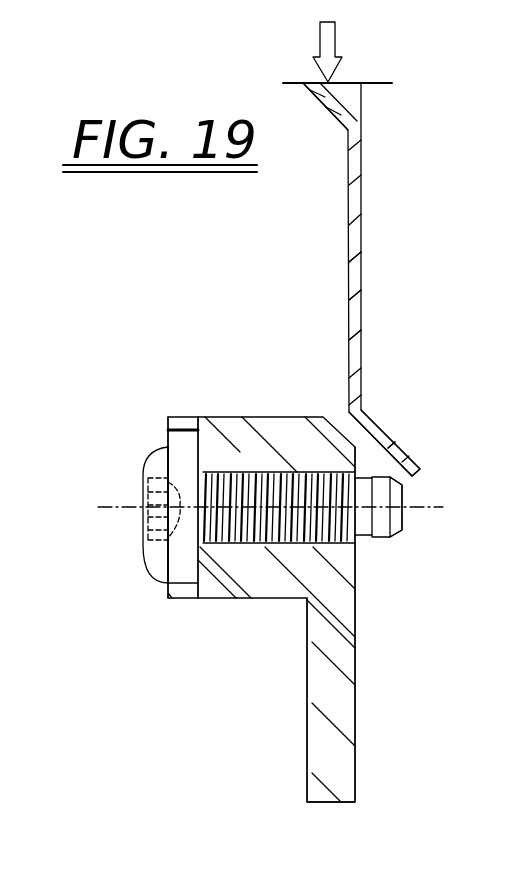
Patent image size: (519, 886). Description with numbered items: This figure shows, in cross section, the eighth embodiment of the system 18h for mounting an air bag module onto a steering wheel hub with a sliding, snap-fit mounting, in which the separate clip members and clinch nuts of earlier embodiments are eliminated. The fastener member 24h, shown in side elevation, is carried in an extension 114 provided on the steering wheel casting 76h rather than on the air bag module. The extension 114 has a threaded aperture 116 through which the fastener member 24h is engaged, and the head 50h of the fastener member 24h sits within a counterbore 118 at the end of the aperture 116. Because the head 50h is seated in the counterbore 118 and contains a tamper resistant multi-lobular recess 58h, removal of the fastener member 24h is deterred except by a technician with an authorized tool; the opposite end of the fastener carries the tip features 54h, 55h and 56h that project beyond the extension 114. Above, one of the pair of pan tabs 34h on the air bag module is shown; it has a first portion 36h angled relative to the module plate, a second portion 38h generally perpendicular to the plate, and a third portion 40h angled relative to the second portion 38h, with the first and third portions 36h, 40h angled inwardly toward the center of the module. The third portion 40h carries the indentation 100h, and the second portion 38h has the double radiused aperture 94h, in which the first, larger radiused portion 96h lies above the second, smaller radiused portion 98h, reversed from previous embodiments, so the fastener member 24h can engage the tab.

The system 18h is at (235, 693).
The fastener member 24h is at (143, 560).
The pan tab 34h is at (360, 188).
The first portion 36h is at (342, 97).
The second portion 38h is at (348, 160).
The third portion 40h is at (378, 420).
The head 50h is at (170, 458).
The screw tip 54h is at (400, 518).
The screw tip cap 55h is at (400, 493).
The screw neck 56h is at (362, 528).
The tamper resistant multi-lobular recess 58h is at (142, 478).
The steering wheel casting 76h is at (348, 735).
The double radiused aperture 94h is at (362, 301).
The first, larger radiused portion 96h is at (362, 268).
The second, smaller radiused portion 98h is at (353, 342).
The indentation 100h is at (388, 458).
The extension 114 is at (342, 602).
The threaded aperture 116 is at (273, 533).
The counterbore 118 is at (168, 430).